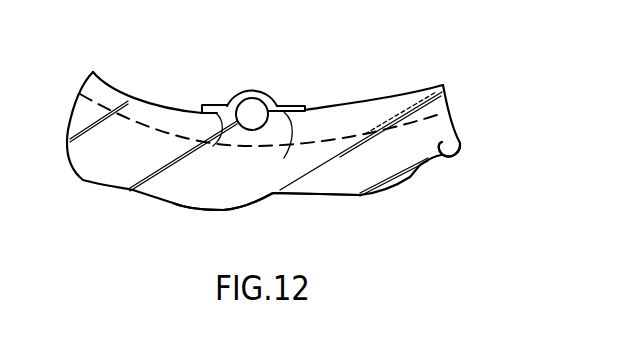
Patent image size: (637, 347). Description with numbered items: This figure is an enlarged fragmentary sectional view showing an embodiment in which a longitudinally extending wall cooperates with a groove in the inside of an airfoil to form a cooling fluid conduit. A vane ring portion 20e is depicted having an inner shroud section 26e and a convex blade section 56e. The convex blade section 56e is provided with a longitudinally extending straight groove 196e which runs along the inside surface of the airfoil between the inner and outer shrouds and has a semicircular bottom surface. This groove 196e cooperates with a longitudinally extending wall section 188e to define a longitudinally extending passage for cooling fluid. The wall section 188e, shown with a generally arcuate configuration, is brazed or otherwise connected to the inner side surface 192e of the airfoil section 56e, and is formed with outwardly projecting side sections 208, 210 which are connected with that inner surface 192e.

The vane ring portion 20e is at (474, 92).
The inner side surface 192e is at (148, 103).
The longitudinally extending groove 196e is at (255, 129).
The wall section 188e is at (257, 90).
The convex blade section 56e is at (370, 133).
The inner shroud section 26e is at (447, 157).
The outwardly projecting side section 208 is at (204, 146).
The outwardly projecting side section 210 is at (305, 145).